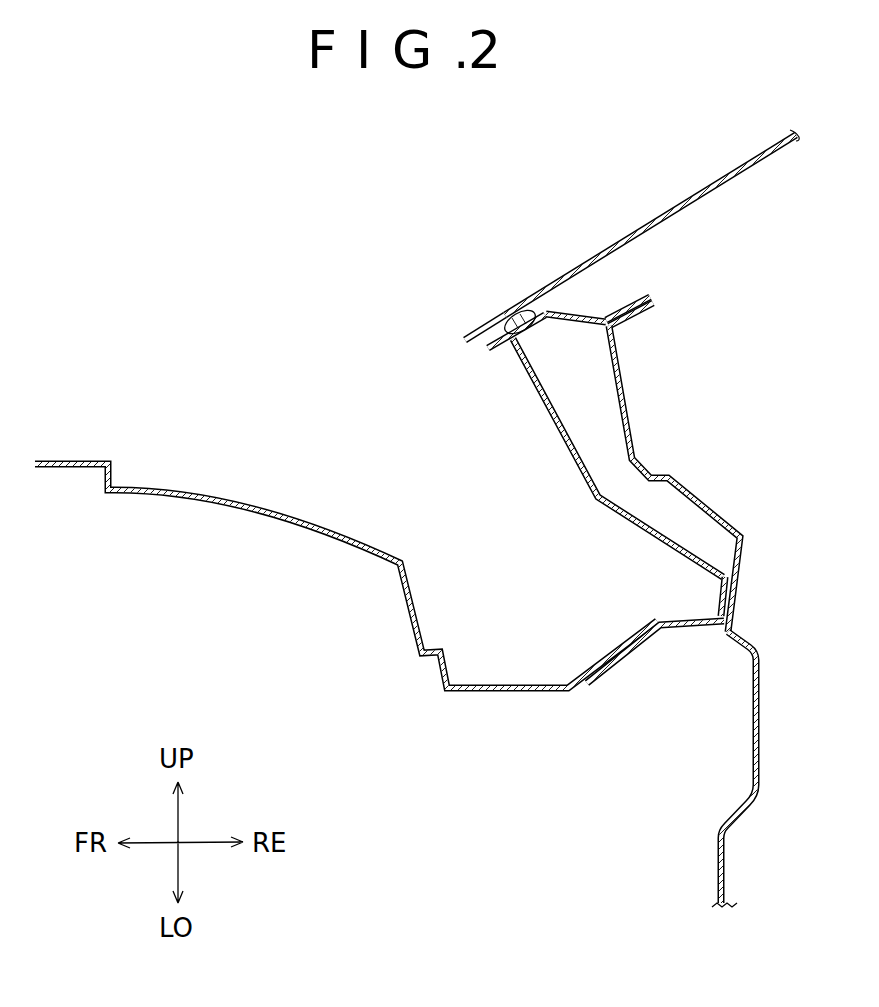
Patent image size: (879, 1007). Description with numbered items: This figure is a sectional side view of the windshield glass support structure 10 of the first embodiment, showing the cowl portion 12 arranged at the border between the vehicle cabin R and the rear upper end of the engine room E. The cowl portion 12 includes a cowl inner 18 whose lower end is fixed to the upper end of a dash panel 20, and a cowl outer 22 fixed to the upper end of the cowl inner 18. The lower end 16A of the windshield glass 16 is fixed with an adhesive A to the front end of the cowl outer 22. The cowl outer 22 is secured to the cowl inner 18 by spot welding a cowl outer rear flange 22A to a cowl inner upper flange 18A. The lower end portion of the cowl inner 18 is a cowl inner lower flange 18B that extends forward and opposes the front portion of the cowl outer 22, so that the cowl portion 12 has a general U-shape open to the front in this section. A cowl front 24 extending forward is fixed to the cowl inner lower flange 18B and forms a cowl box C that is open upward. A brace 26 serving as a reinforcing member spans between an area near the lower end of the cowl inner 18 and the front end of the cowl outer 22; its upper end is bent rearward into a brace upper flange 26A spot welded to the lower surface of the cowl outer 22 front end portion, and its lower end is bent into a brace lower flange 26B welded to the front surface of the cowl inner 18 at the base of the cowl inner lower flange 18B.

The windshield glass support structure 10 is at (386, 332).
The cowl portion 12 is at (670, 401).
The windshield glass 16 is at (658, 217).
The lower end of the windshield glass 16A is at (477, 330).
The cowl inner 18 is at (634, 432).
The cowl inner upper flange 18A is at (637, 318).
The cowl inner lower flange 18B is at (628, 657).
The dash panel 20 is at (751, 765).
The cowl outer 22 is at (580, 314).
The cowl outer rear flange 22A is at (650, 302).
The cowl front 24 is at (418, 603).
The brace 26 is at (551, 410).
The brace upper flange 26A is at (530, 336).
The brace lower flange 26B is at (718, 593).
The adhesive A is at (540, 300).
The cowl box C is at (467, 499).
The engine room E is at (341, 726).
The vehicle cabin R is at (814, 757).